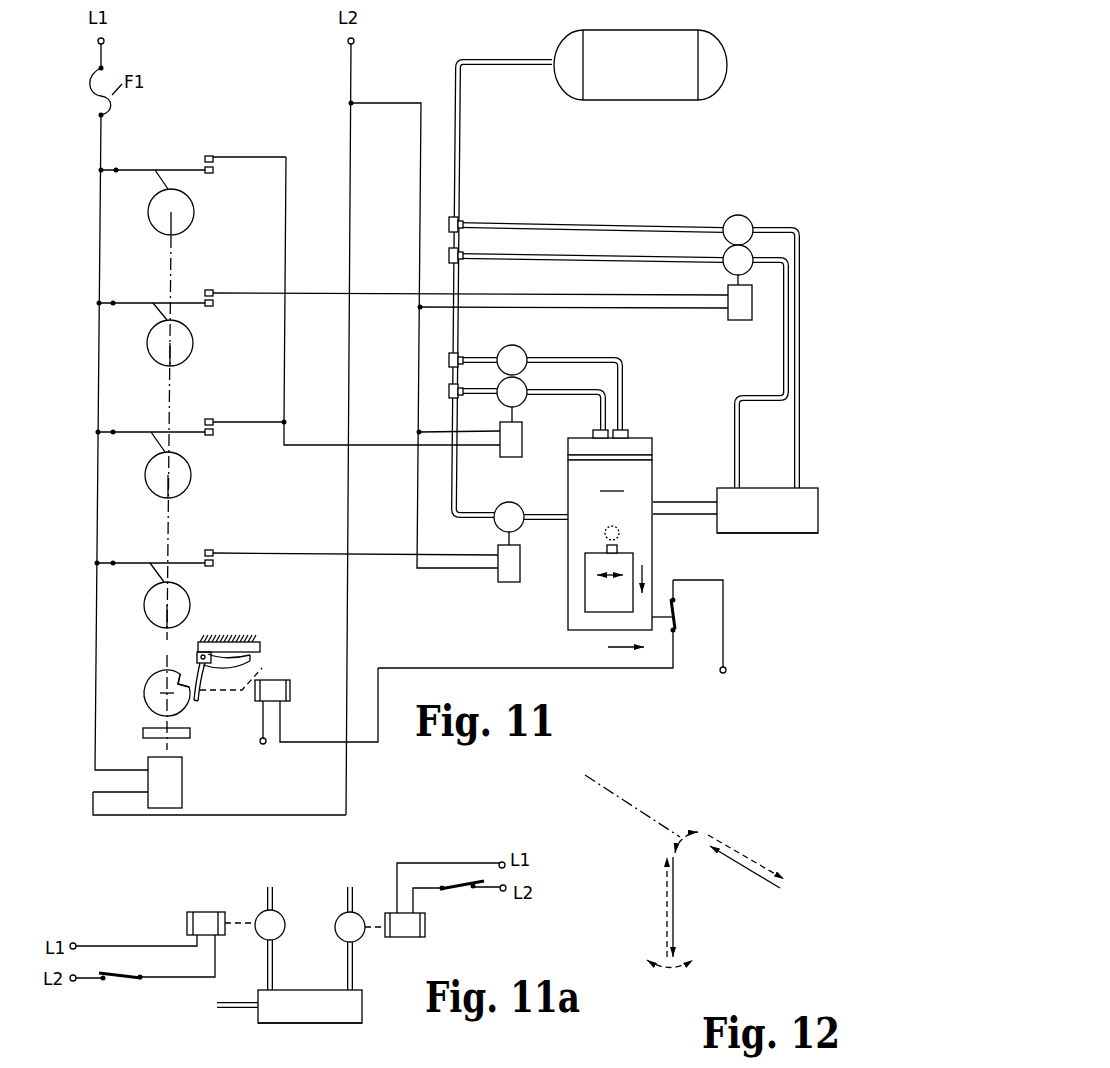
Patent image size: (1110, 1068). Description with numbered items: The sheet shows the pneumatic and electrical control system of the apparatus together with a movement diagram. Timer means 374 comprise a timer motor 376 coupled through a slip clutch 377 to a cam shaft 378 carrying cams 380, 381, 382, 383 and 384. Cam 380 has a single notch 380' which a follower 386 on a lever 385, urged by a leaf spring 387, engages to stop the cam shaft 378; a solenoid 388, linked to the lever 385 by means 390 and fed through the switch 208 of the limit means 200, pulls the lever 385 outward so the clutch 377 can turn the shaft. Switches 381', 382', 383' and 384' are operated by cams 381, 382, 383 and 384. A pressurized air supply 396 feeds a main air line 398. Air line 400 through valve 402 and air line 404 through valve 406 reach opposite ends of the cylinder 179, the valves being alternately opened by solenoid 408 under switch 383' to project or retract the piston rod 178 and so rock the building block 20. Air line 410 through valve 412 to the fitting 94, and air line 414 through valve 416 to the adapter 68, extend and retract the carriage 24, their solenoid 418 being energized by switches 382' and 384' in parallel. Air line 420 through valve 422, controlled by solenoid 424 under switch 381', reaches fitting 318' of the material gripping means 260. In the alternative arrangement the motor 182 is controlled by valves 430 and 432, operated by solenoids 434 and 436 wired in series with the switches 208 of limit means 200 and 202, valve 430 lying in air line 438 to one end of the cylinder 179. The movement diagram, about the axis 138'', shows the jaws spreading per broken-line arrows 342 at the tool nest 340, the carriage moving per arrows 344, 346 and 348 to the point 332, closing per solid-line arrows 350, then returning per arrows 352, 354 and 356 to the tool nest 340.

In FIG. 11, the building block 20 is at (660, 467).
In FIG. 11, the carriage 24 is at (612, 482).
In FIG. 11, the adapter 68 is at (592, 428).
In FIG. 11, the fitting 94 is at (631, 428).
In FIG. 12, the axis 138'' is at (636, 806).
In FIG. 11, the piston rod 178 is at (686, 508).
In FIG. 11A, the piston rod 178 is at (240, 1008).
In FIG. 11, the cylinder 179 is at (790, 520).
In FIG. 11A, the cylinder 179 is at (365, 1005).
In FIG. 11, the motor 182 is at (770, 540).
In FIG. 11A, the motor 182 is at (361, 1027).
In FIG. 11, the limit means 200 is at (686, 622).
In FIG. 11A, the limit means 200 is at (117, 986).
In FIG. 11A, the limit means 202 is at (468, 894).
In FIG. 11, the switch 208 is at (675, 610).
In FIG. 11A, the switch 208 is at (116, 976).
In FIG. 11, the material gripping means 260 is at (594, 619).
In FIG. 11, the fitting 318' is at (640, 569).
In FIG. 11A, the point 332 is at (285, 1058).
In FIG. 12, the point 332 is at (800, 893).
In FIG. 12, the tool nest 340 is at (670, 977).
In FIG. 12, the broken-line arrows 342 is at (655, 968).
In FIG. 12, the broken-line arrow 344 is at (667, 921).
In FIG. 12, the broken-line arrow 346 is at (676, 850).
In FIG. 12, the broken-line arrow 348 is at (757, 862).
In FIG. 12, the solid-line arrows 350 is at (798, 877).
In FIG. 12, the solid-line arrow 352 is at (742, 867).
In FIG. 12, the solid-line arrow 354 is at (687, 861).
In FIG. 12, the solid-line arrow 356 is at (677, 916).
In FIG. 11, the timer means 374 is at (353, 595).
In FIG. 11, the timer motor 376 is at (178, 783).
In FIG. 11, the slip clutch 377 is at (180, 740).
In FIG. 11, the cam shaft 378 is at (166, 640).
In FIG. 11, the cam 380 is at (145, 698).
In FIG. 11, the notch 380' is at (157, 671).
In FIG. 11, the cam 381 is at (192, 595).
In FIG. 11, the switch 381' is at (351, 537).
In FIG. 11, the cam 382 is at (194, 465).
In FIG. 11, the switch 382' is at (244, 407).
In FIG. 11, the cam 383 is at (200, 334).
In FIG. 11, the switch 383' is at (466, 278).
In FIG. 11, the cam 384 is at (193, 202).
In FIG. 11, the switch 384' is at (245, 145).
In FIG. 11, the lever 385 is at (200, 695).
In FIG. 11, the follower 386 is at (199, 706).
In FIG. 11, the leaf spring 387 is at (248, 660).
In FIG. 11, the solenoid 388 is at (292, 693).
In FIG. 11, the linking means 390 is at (248, 675).
In FIG. 11, the pressurized air supply 396 is at (714, 53).
In FIG. 11, the main air line 398 is at (460, 203).
In FIG. 11, the air line 400 is at (660, 224).
In FIG. 11, the valve 402 is at (748, 221).
In FIG. 11, the air line 404 is at (640, 261).
In FIG. 11, the valve 406 is at (732, 268).
In FIG. 11, the solenoid 408 is at (735, 322).
In FIG. 11, the air line 410 is at (477, 356).
In FIG. 11, the valve 412 is at (520, 349).
In FIG. 11, the air line 414 is at (470, 396).
In FIG. 11, the valve 416 is at (521, 400).
In FIG. 11, the solenoid 418 is at (512, 446).
In FIG. 11, the air line 420 is at (461, 512).
In FIG. 11, the valve 422 is at (521, 512).
In FIG. 11, the solenoid 424 is at (521, 570).
In FIG. 11A, the valve 430 is at (280, 935).
In FIG. 11A, the valve 432 is at (358, 939).
In FIG. 11A, the solenoid 434 is at (203, 922).
In FIG. 11A, the solenoid 436 is at (410, 930).
In FIG. 11A, the air line 438 is at (273, 902).